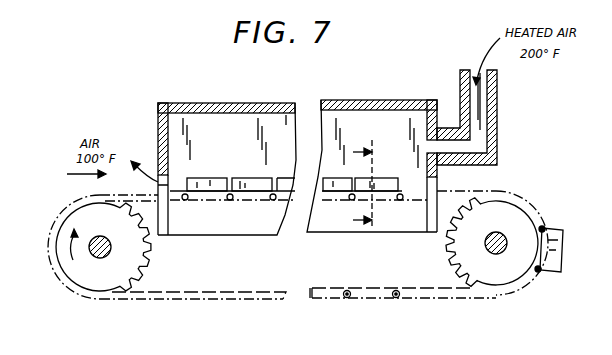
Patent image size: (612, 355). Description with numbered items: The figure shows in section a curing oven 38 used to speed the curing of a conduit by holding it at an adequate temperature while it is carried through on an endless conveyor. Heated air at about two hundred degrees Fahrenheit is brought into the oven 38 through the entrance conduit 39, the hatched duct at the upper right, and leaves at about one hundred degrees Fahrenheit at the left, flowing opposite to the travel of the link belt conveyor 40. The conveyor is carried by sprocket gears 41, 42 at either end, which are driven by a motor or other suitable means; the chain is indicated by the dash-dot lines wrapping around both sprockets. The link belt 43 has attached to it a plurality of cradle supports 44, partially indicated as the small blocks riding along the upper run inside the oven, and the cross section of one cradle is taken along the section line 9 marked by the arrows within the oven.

The section line 9— 9 is at (369, 186).
The oven 38 is at (195, 103).
The entrance conduit 39 is at (478, 110).
The link belt conveyor 40 is at (53, 263).
The sprocket gear 41 is at (138, 259).
The sprocket gear 42 is at (464, 248).
The link belt 43 is at (373, 298).
The cradle supports 44 is at (219, 183).